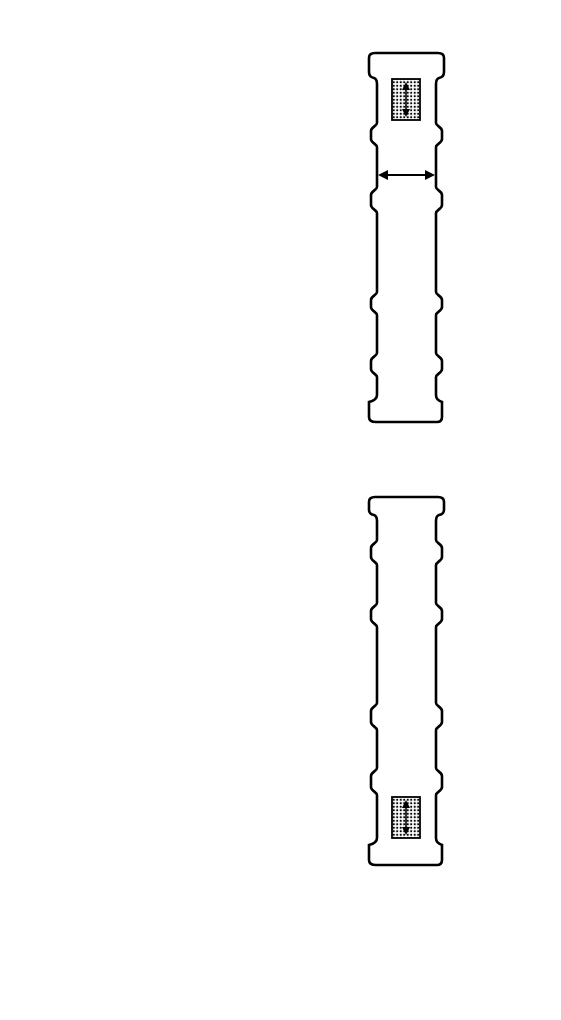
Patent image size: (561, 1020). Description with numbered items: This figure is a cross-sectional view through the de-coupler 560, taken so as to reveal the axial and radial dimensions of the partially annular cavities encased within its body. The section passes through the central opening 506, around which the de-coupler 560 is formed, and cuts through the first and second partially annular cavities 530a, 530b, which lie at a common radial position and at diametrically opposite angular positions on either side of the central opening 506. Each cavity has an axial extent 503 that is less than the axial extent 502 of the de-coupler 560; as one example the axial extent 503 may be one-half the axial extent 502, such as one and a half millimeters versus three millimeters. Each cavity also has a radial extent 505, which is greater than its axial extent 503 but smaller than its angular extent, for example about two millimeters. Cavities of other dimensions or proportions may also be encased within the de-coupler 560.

The de-coupler 560 is at (277, 365).
The central opening 506 is at (418, 471).
The axial extent of annular cavity 503 is at (414, 83).
The first partially annular cavity 530a is at (392, 108).
The axial extent of de-coupler 502 is at (410, 168).
The radial extent of cavity 505 is at (400, 815).
The second partially annular cavity 530b is at (420, 812).